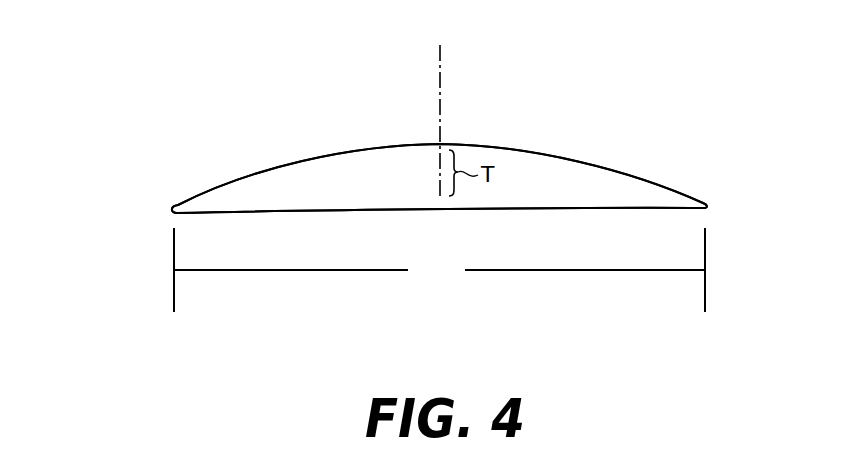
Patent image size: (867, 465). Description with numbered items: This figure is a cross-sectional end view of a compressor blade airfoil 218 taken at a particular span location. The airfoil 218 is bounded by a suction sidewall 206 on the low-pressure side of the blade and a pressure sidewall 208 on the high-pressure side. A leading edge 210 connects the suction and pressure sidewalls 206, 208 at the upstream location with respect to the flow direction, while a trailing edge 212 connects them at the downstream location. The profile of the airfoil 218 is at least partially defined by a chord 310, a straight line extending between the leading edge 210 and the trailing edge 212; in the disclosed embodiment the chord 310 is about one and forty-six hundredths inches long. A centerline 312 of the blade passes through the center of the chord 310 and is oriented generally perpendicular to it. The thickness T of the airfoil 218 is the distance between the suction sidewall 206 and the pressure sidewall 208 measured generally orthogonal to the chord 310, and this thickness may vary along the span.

The airfoil 218 is at (128, 91).
The suction sidewall 206 is at (553, 150).
The pressure sidewall 208 is at (278, 212).
The trailing edge 212 is at (172, 209).
The leading edge 210 is at (707, 204).
The centerline 312 is at (439, 107).
The chord 310 is at (439, 270).